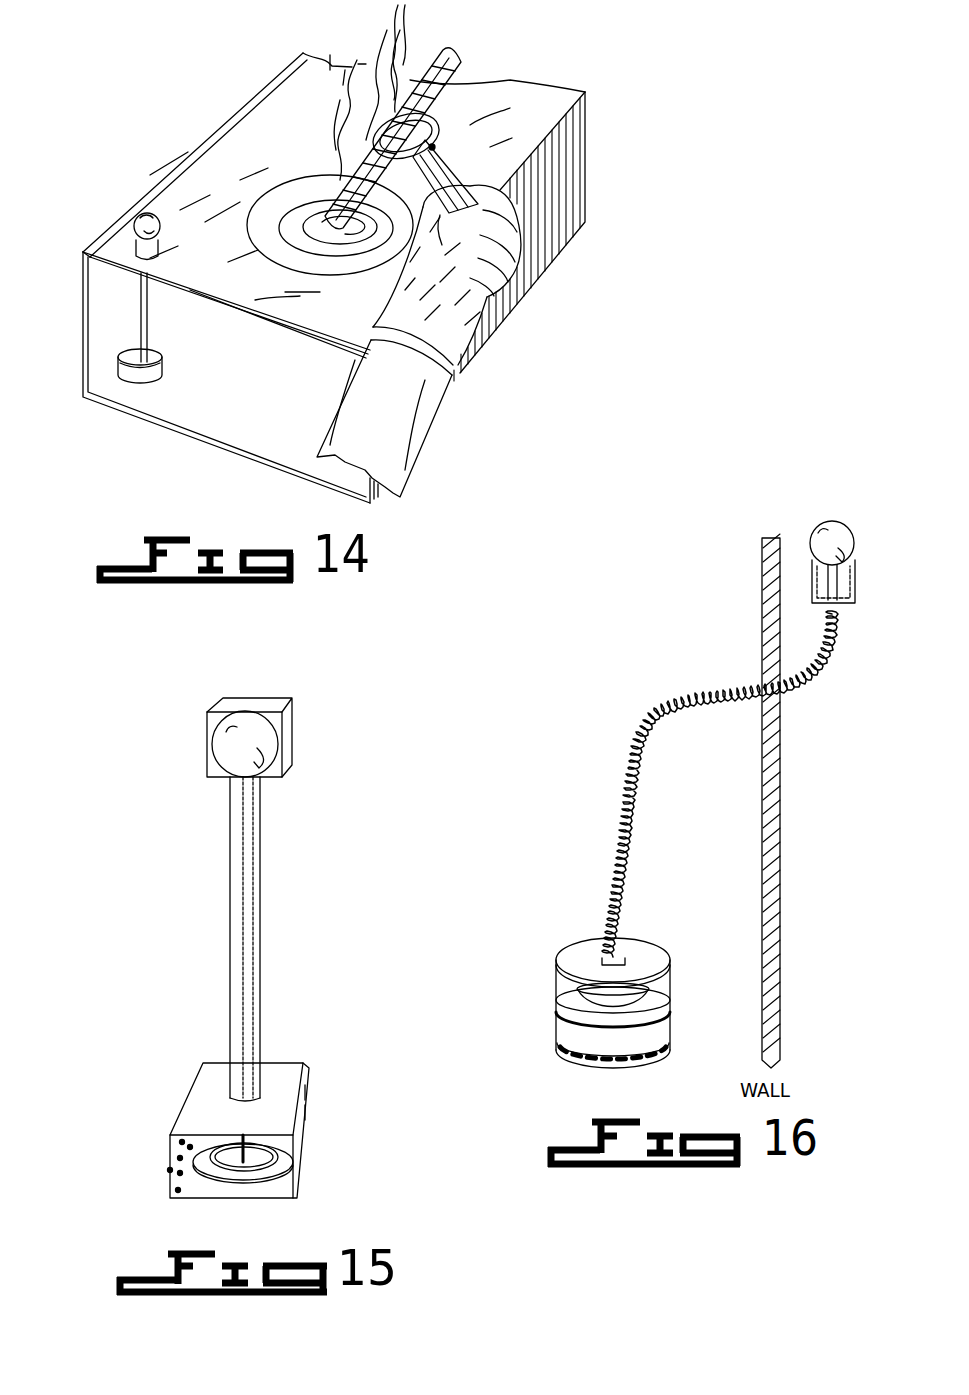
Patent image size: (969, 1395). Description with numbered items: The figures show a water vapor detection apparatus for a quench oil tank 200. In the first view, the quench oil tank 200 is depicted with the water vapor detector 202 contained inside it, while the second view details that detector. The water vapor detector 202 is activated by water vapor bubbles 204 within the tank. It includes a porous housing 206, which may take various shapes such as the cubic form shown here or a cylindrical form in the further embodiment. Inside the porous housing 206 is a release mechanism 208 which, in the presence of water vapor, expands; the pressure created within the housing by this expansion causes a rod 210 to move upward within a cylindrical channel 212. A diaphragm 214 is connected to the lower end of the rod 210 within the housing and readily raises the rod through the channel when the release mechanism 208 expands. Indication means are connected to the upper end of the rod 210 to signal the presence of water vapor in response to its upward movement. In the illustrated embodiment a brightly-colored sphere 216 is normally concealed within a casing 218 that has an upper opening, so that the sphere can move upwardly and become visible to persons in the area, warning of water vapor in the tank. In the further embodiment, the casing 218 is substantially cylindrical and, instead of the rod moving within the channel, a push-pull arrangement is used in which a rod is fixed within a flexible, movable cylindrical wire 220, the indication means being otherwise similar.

In FIG. 14, the quench oil tank 200 is at (538, 75).
In FIG. 14, the water vapor detector 202 is at (126, 316).
In FIG. 15, the water vapor detector 202 is at (250, 946).
In FIG. 16, the water vapor detector 202 is at (661, 777).
In FIG. 15, the water vapor bubbles 204 is at (190, 1148).
In FIG. 15, the porous housing 206 is at (290, 1078).
In FIG. 16, the porous housing 206 is at (653, 963).
In FIG. 15, the release mechanism 208 is at (279, 1184).
In FIG. 16, the release mechanism 208 is at (570, 1007).
In FIG. 15, the rod 210 is at (254, 897).
In FIG. 15, the cylindrical channel 212 is at (263, 824).
In FIG. 15, the diaphragm 214 is at (288, 1153).
In FIG. 15, the brightly-colored sphere 216 is at (277, 762).
In FIG. 16, the brightly-colored sphere 216 is at (818, 528).
In FIG. 15, the casing 218 is at (284, 701).
In FIG. 16, the casing 218 is at (814, 589).
In FIG. 16, the flexible, movable cylindrical wire 220 is at (648, 716).